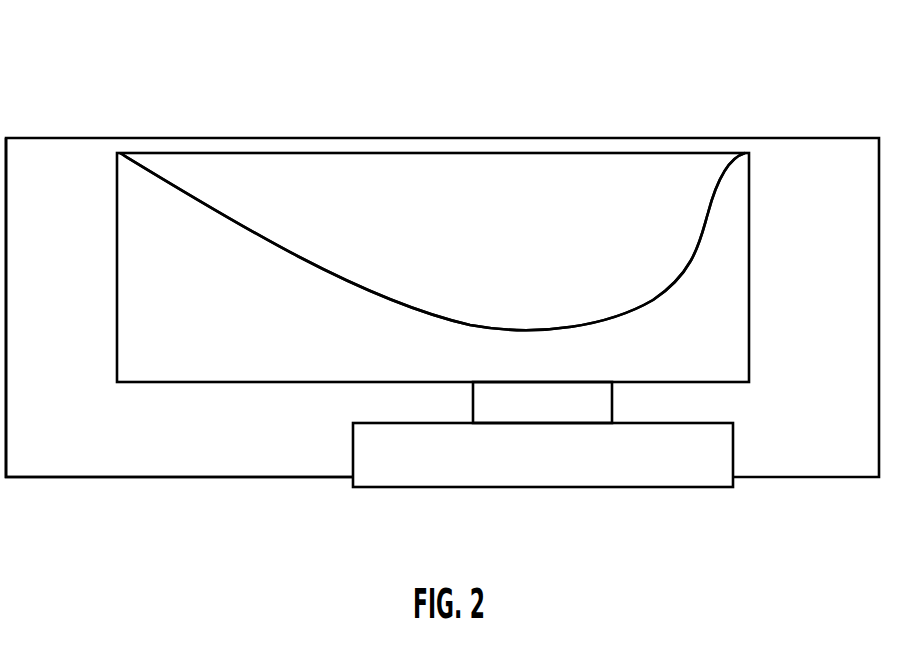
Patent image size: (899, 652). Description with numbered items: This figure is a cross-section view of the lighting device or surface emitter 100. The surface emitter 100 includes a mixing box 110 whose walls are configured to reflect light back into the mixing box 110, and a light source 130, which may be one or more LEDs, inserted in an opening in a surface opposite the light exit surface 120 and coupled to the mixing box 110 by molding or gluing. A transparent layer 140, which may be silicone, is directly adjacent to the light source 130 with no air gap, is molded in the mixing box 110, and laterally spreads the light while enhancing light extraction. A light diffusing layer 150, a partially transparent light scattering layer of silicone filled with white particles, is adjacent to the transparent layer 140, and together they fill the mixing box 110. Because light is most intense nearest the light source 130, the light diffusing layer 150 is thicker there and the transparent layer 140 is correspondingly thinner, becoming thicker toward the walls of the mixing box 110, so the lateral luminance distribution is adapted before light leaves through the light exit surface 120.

The lighting device or surface emitter 100 is at (107, 71).
The mixing box 110 is at (847, 455).
The light exit surface 120 is at (727, 137).
The light source 130 is at (493, 452).
The transparent layer 140 is at (258, 357).
The light diffusing layer 150 is at (445, 193).